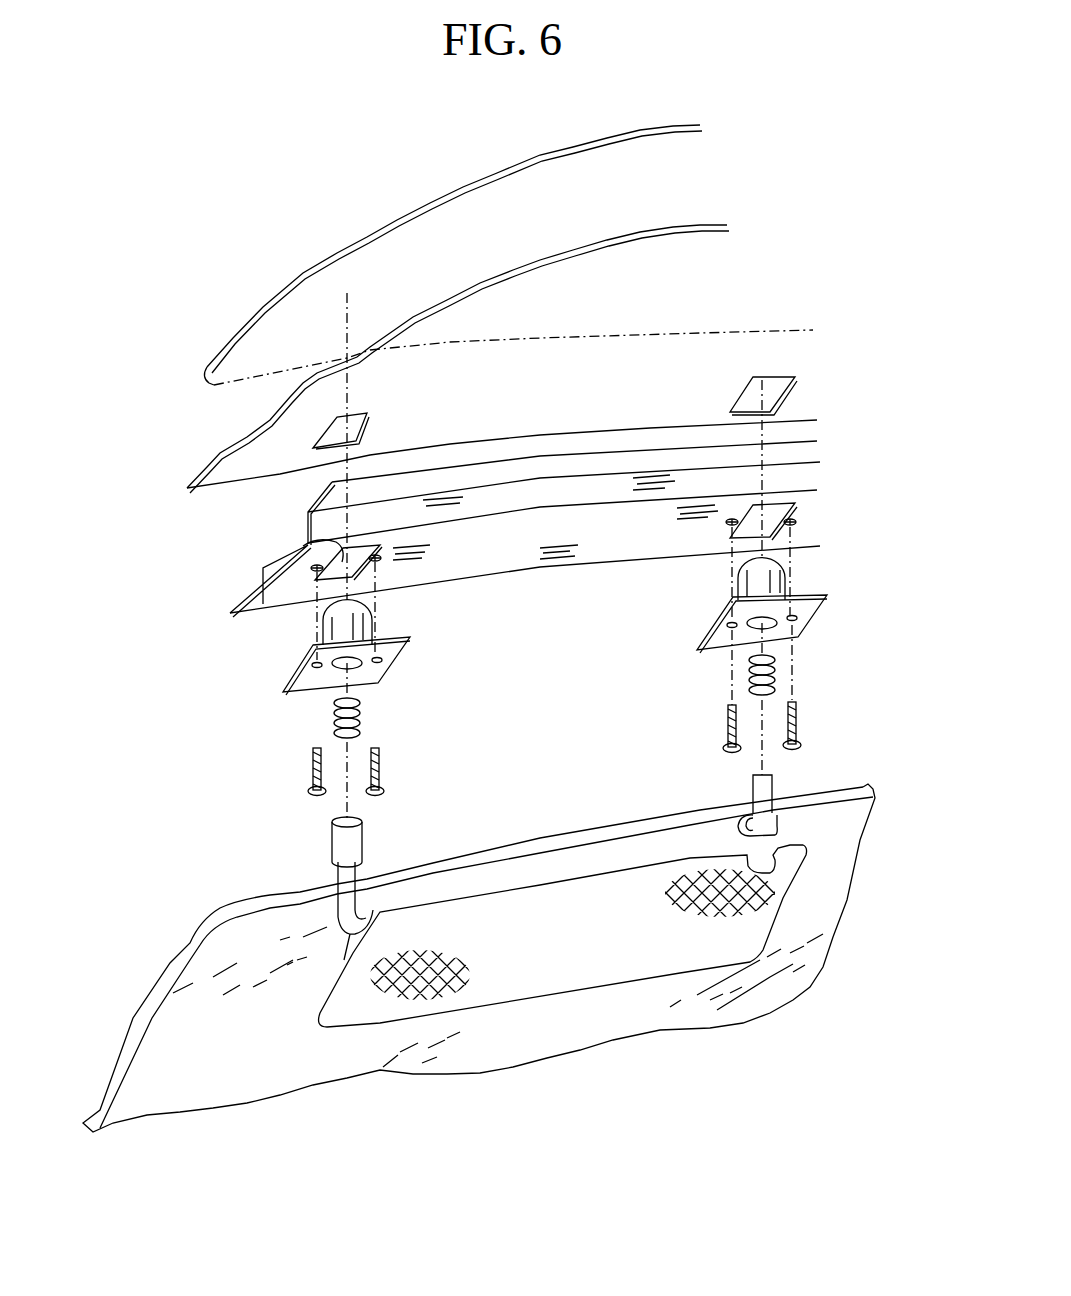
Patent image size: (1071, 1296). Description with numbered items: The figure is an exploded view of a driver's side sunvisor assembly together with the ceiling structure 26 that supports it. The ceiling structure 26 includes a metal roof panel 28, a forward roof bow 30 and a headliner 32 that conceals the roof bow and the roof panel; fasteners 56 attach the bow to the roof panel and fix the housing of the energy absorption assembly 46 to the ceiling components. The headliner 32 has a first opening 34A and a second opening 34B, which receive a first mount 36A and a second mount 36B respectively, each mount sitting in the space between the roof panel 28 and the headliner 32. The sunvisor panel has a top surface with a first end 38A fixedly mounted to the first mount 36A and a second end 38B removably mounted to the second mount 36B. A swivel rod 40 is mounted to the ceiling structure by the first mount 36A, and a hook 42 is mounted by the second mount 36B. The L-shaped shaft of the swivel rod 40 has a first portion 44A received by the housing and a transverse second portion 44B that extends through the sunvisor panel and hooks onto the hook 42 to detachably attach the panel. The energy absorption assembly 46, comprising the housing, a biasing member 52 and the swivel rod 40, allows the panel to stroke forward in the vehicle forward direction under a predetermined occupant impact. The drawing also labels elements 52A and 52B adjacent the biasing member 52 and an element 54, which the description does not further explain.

The ceiling structure 26 is at (627, 98).
The roof panel 28 is at (382, 223).
The forward roof bow 30 is at (505, 275).
The headliner 32 is at (248, 603).
The first opening 34A is at (303, 546).
The second opening 34B is at (783, 540).
The first mount 36A is at (192, 685).
The second mount 36B is at (691, 682).
The first end 38A is at (267, 896).
The second end 38B is at (830, 795).
The swivel rod 40 is at (252, 956).
The hook 42 is at (763, 823).
The first portion 44A is at (335, 841).
The second portion 44B is at (365, 880).
The energy absorption assembly 46 is at (456, 690).
The biasing member 52 is at (487, 714).
The spring lower end 52A is at (363, 735).
The spring upper end 52B is at (335, 705).
The mounting plate 54 is at (400, 652).
The fasteners 56 is at (385, 585).